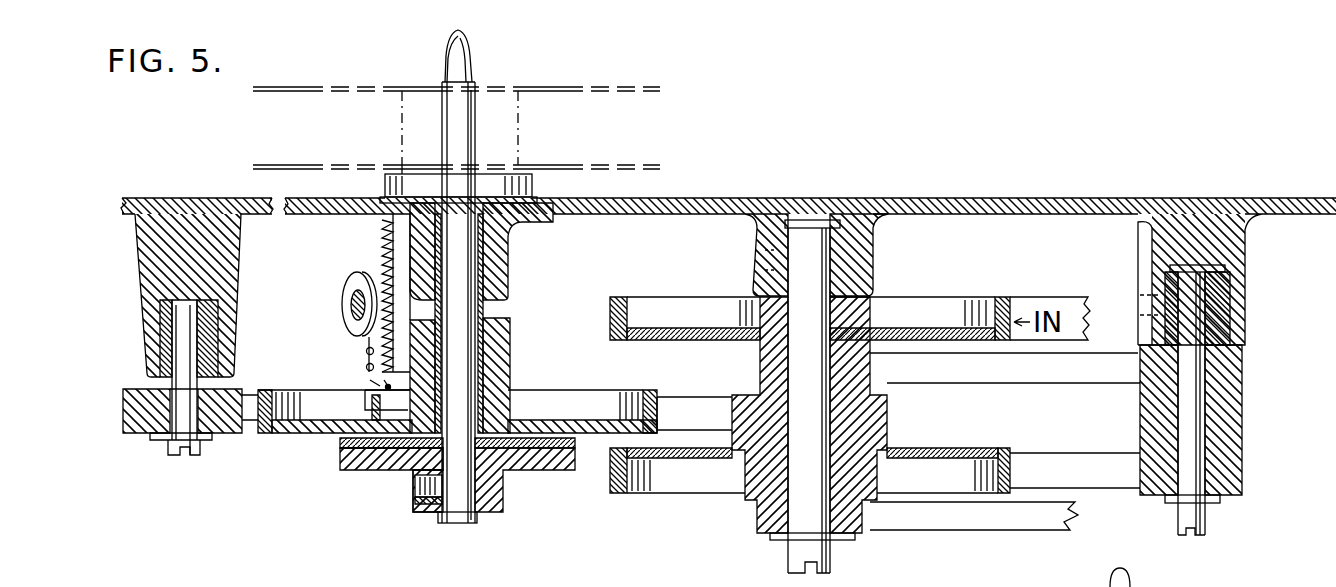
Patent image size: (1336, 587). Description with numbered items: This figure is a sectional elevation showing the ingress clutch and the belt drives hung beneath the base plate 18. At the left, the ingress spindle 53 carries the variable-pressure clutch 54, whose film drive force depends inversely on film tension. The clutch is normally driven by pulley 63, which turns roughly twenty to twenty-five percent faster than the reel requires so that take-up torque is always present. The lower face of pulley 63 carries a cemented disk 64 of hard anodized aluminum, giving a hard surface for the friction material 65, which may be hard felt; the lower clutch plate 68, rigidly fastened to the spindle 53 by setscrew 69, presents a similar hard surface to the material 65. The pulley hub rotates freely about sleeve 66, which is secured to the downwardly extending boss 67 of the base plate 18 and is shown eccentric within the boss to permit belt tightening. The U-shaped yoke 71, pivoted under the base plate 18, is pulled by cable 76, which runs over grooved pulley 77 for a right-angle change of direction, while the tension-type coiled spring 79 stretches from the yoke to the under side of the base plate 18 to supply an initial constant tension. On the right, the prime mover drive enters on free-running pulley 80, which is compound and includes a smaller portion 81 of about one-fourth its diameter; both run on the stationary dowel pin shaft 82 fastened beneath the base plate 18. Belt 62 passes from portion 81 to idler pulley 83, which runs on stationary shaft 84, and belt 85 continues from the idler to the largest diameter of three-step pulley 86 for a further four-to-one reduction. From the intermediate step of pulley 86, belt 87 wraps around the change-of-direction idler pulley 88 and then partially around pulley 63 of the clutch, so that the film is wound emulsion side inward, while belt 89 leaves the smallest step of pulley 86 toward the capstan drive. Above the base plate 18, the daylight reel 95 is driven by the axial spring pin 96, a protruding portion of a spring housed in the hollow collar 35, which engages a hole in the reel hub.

The base plate 18 is at (968, 198).
The hollow collar 35 is at (532, 188).
The ingress spindle 53 is at (470, 67).
The clutch 54 is at (352, 490).
The belt 62 is at (1105, 383).
The pulley 63 is at (322, 386).
The disk 64 is at (338, 440).
The material 65 is at (340, 452).
The sleeve 66 is at (495, 320).
The boss 67 is at (508, 242).
The lower clutch plate 68 is at (543, 470).
The setscrew 69 is at (412, 488).
The yoke 71 is at (358, 412).
The cable 76 is at (343, 275).
The grooved pulley 77 is at (352, 320).
The coiled spring 79 is at (380, 245).
The free-running pulley 80 is at (940, 298).
The smaller portion 81 is at (760, 372).
The dowel pin shaft 82 is at (847, 530).
The idler pulley 83 is at (1243, 410).
The stationary shaft 84 is at (1207, 518).
The belt 85 is at (1103, 486).
The three-step pulley 86 is at (928, 455).
The belt 87 is at (695, 425).
The change-of-direction idler pulley 88 is at (194, 377).
The belt 89 is at (1022, 529).
The daylight reel 95 is at (555, 86).
The axial spring pin 96 is at (421, 172).